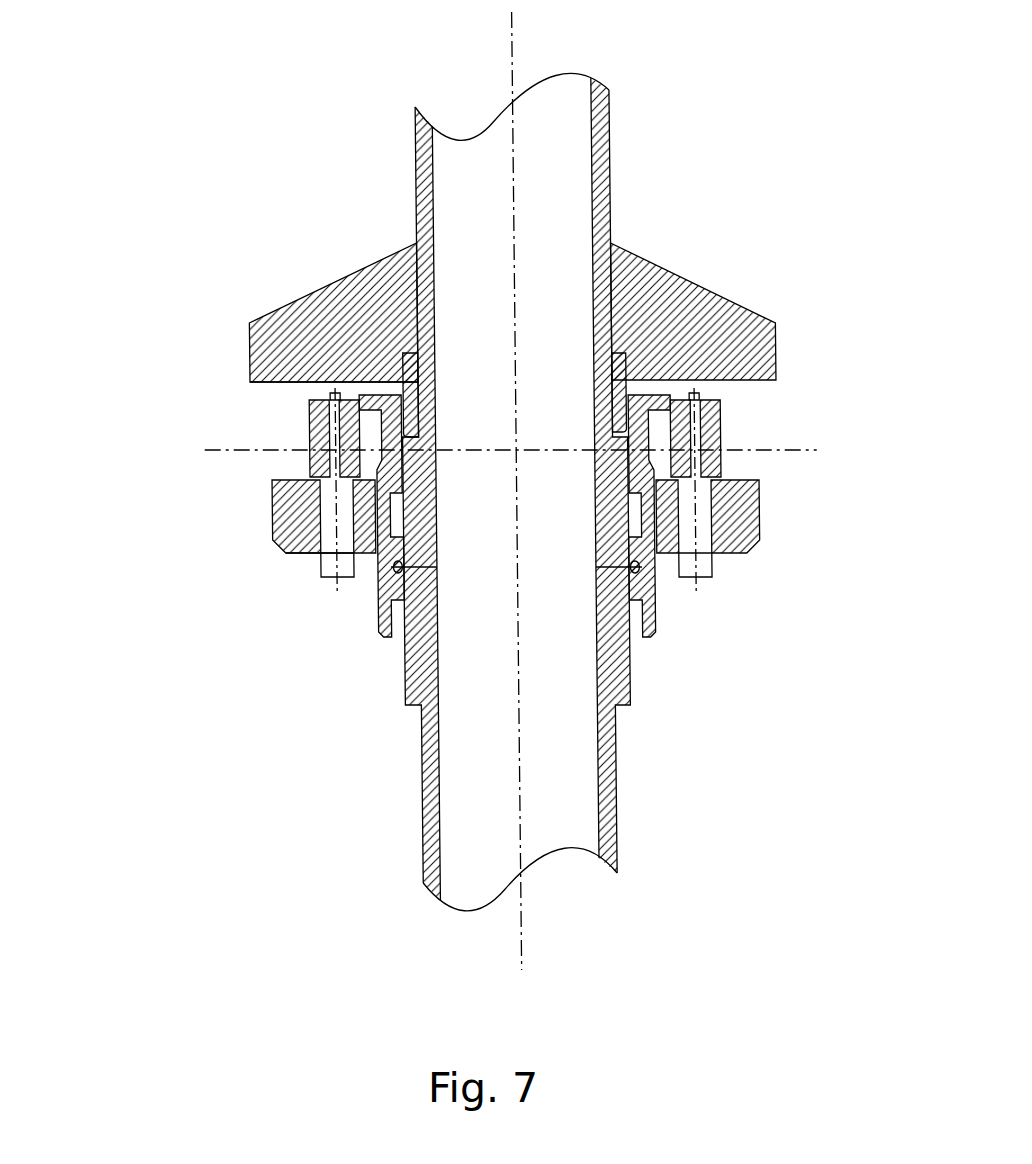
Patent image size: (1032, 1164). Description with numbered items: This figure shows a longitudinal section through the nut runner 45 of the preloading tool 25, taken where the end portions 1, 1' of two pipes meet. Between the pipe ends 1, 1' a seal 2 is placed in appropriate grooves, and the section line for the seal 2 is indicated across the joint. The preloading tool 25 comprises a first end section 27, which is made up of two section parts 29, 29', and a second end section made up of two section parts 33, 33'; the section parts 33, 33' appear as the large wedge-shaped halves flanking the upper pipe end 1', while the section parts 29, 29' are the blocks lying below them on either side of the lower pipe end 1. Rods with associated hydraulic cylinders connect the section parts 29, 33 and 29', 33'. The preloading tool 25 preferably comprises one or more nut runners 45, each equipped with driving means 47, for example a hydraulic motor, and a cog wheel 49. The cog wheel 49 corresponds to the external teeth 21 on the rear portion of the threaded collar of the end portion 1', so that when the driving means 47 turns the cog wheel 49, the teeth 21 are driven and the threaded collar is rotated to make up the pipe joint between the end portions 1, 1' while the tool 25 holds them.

The end portion of pipe 1 is at (517, 692).
The end portion of pipe 1' is at (513, 198).
The section part 33 is at (234, 340).
The section part 33' is at (772, 337).
The preloading tool 25 is at (228, 384).
The external teeth 21 is at (692, 392).
The cog wheel 49 is at (306, 422).
The first end section 27 is at (170, 521).
The section part 29 is at (236, 587).
The section part 29' is at (792, 541).
The nut runner 45 is at (291, 602).
The driving means 47 is at (331, 578).
The seal 2 is at (798, 452).